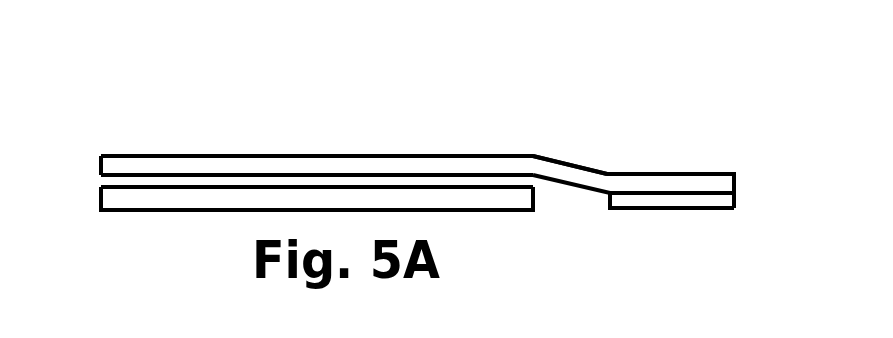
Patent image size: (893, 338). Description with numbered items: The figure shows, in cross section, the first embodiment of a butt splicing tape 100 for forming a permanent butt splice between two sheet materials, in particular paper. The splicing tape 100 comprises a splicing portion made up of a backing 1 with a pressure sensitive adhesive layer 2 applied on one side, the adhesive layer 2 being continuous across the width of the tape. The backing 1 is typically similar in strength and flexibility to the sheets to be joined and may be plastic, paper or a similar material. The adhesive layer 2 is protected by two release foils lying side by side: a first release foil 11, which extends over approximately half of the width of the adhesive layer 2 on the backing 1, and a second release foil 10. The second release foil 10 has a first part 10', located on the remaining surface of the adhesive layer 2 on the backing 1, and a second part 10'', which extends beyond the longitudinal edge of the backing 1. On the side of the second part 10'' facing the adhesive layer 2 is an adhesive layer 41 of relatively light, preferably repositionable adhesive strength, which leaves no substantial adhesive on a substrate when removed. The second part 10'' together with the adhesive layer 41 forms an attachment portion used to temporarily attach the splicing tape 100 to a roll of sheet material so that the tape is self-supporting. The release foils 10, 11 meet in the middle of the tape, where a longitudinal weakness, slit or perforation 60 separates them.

The backing 1 is at (200, 200).
The pressure sensitive adhesive layer 2 is at (115, 181).
The second release foil 10 is at (417, 144).
The first part of second release foil 10' is at (430, 129).
The second part of second release foil 10'' is at (680, 147).
The first release foil 11 is at (168, 163).
The adhesive layer 41 is at (692, 200).
The fold line 60 is at (330, 173).
The splicing tape 100 is at (596, 110).